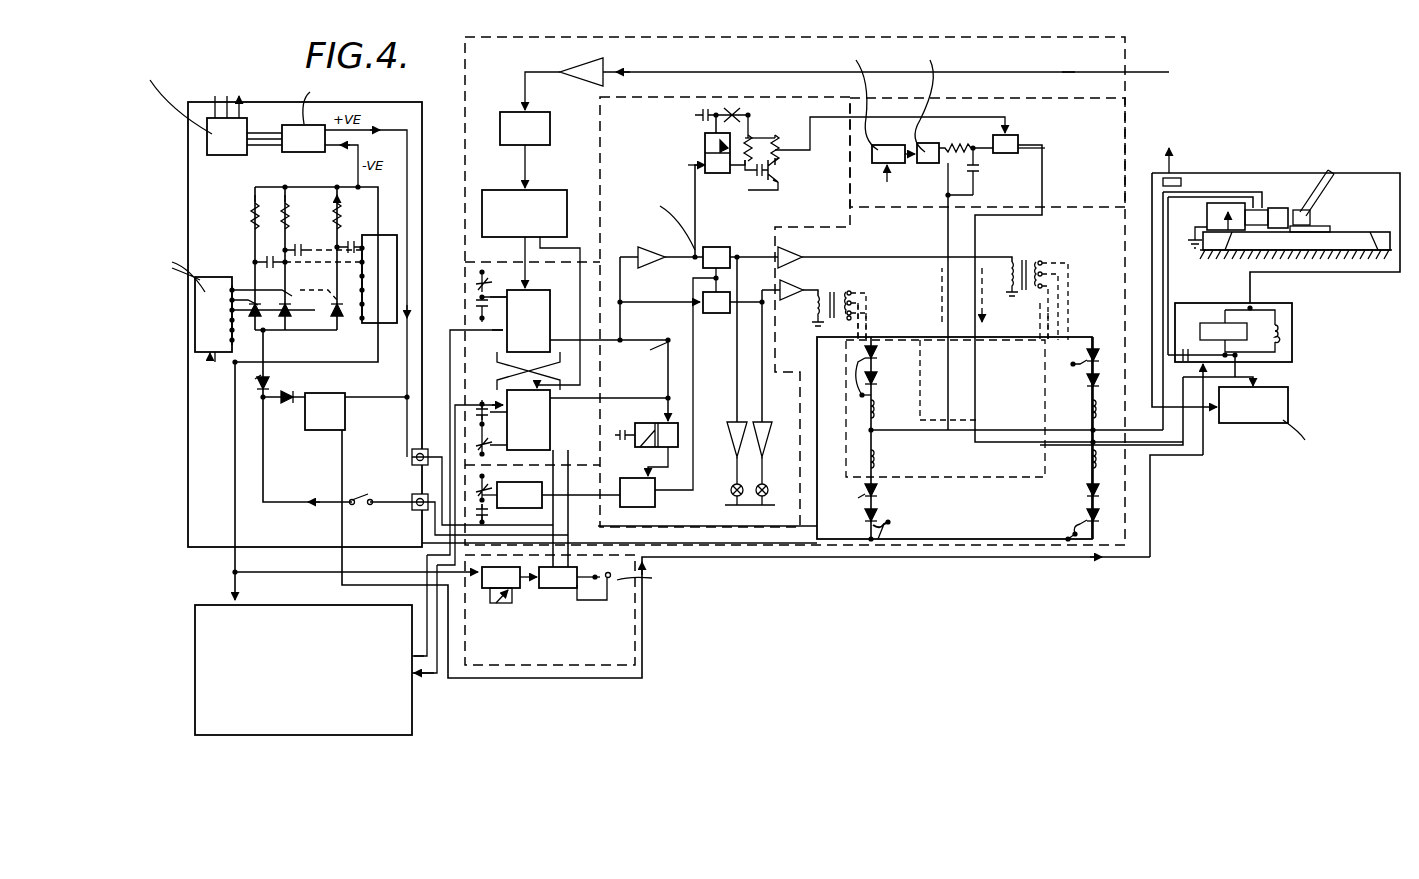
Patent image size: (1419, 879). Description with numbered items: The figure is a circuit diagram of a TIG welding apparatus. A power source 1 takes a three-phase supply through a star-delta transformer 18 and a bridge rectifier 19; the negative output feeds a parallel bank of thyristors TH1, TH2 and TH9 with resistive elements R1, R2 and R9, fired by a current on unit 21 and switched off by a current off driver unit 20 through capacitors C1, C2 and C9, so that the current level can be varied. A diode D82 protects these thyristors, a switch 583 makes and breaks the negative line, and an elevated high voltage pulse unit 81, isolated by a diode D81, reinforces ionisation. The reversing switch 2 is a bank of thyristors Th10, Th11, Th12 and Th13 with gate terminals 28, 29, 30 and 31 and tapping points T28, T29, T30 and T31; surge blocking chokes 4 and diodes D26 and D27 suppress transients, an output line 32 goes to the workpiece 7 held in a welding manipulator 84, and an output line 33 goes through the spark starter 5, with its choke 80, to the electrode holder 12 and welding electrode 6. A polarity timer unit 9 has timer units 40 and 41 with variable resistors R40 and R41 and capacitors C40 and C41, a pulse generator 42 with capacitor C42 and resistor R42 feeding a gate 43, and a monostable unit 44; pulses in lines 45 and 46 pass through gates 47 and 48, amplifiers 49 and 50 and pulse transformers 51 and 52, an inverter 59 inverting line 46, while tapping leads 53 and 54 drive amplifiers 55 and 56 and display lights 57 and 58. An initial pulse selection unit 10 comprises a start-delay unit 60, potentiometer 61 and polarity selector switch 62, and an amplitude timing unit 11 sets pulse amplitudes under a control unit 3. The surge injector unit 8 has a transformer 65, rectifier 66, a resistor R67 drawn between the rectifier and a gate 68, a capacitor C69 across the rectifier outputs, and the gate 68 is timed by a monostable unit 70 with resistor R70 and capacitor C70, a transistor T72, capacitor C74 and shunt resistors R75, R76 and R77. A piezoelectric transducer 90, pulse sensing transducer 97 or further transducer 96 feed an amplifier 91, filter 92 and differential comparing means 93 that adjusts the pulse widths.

The power source 1 is at (264, 99).
The reversing switch 2 is at (968, 530).
The control unit 3 is at (812, 246).
The surge blocking choke 4 is at (990, 439).
The spark starter 5 is at (1292, 352).
The TIG welding electrode 6 is at (1300, 208).
The workpiece 7 is at (1275, 208).
The surge injector unit 8 is at (1035, 186).
The polarity timer unit 9 is at (598, 512).
The initial pulse selection unit 10 is at (618, 645).
The amplitude timing unit 11 is at (205, 612).
The electrode holder 12 is at (1332, 170).
The star-delta transformer 18 is at (218, 160).
The 3-phase bridge rectifier 19 is at (306, 145).
The current off driver unit 20 is at (386, 240).
The current on unit 21 is at (196, 315).
The gate terminal 28 is at (862, 366).
The gate terminal 29 is at (1070, 364).
The gate terminal 30 is at (1074, 528).
The gate terminal 31 is at (894, 512).
The output line 32 is at (928, 436).
The output line 33 is at (1168, 448).
The timer unit 40 is at (552, 410).
The timer unit 41 is at (540, 306).
The pulse generator 42 is at (542, 488).
The gate 43 is at (634, 488).
The monostable unit 44 is at (652, 410).
The line 45 is at (676, 302).
The line 46 is at (620, 260).
The gate 47 is at (703, 314).
The gate 48 is at (730, 240).
The amplifier 49 is at (792, 282).
The amplifier 50 is at (794, 246).
The pulse transformer 51 is at (840, 292).
The pulse transformer 52 is at (1022, 258).
The tapping lead 53 is at (760, 340).
The tapping lead 54 is at (736, 378).
The amplifier 55 is at (728, 438).
The amplifier 56 is at (770, 438).
The display light 57 is at (730, 492).
The display light 58 is at (769, 492).
The inverter 59 is at (648, 262).
The capacitative start-delay unit 60 is at (510, 690).
The shunt variable potentiometer 61 is at (500, 600).
The polarity selector switch 62 is at (580, 698).
The transformer 65 is at (893, 148).
The rectifier 66 is at (935, 150).
The gate 68 is at (1010, 142).
The monostable unit 70 is at (704, 146).
The choke 80 is at (1280, 330).
The elevated high voltage pulse unit 81 is at (296, 443).
The welding manipulator 84 is at (1258, 250).
The piezoelectric transducer 90 is at (1325, 226).
The amplifier 91 is at (585, 62).
The filter 92 is at (512, 116).
The differential comparing means 93 is at (510, 193).
The further transducer device 96 is at (1182, 184).
The pulse sensing transducer 97 is at (1240, 420).
The resistive element R1 is at (245, 216).
The resistive element R2 is at (295, 216).
The resistive element R9 is at (347, 216).
The capacitor C1 is at (252, 262).
The capacitor C2 is at (288, 248).
The capacitor C9 is at (340, 247).
The thyristor TH1 is at (262, 316).
The thyristor TH2 is at (292, 316).
The thyristor TH9 is at (343, 316).
The diode D81 is at (282, 398).
The diode D82 is at (256, 384).
The switch 583 is at (364, 497).
The variable resistor R41 is at (478, 283).
The capacitor C41 is at (476, 305).
The capacitor C40 is at (480, 412).
The variable resistor R40 is at (490, 452).
The resistor R42 is at (480, 490).
The capacitor C42 is at (478, 504).
The capacitor C70 is at (716, 112).
The variable resistor R70 is at (736, 113).
The shunt resistor R76 is at (756, 136).
The shunt resistor R77 is at (782, 156).
The shunt resistor R75 is at (745, 172).
The capacitor C74 is at (758, 178).
The transistor T72 is at (768, 183).
The resistor R67 is at (948, 147).
The capacitor C69 is at (991, 171).
The thyristor Th10 is at (878, 350).
The thyristor Th11 is at (1101, 348).
The thyristor Th12 is at (1082, 518).
The thyristor Th13 is at (866, 503).
The diode D26 is at (878, 377).
The diode D27 is at (1086, 382).
The tapping point T28 is at (872, 394).
The tapping point T29 is at (1070, 366).
The tapping point T30 is at (1066, 530).
The tapping point T31 is at (892, 522).